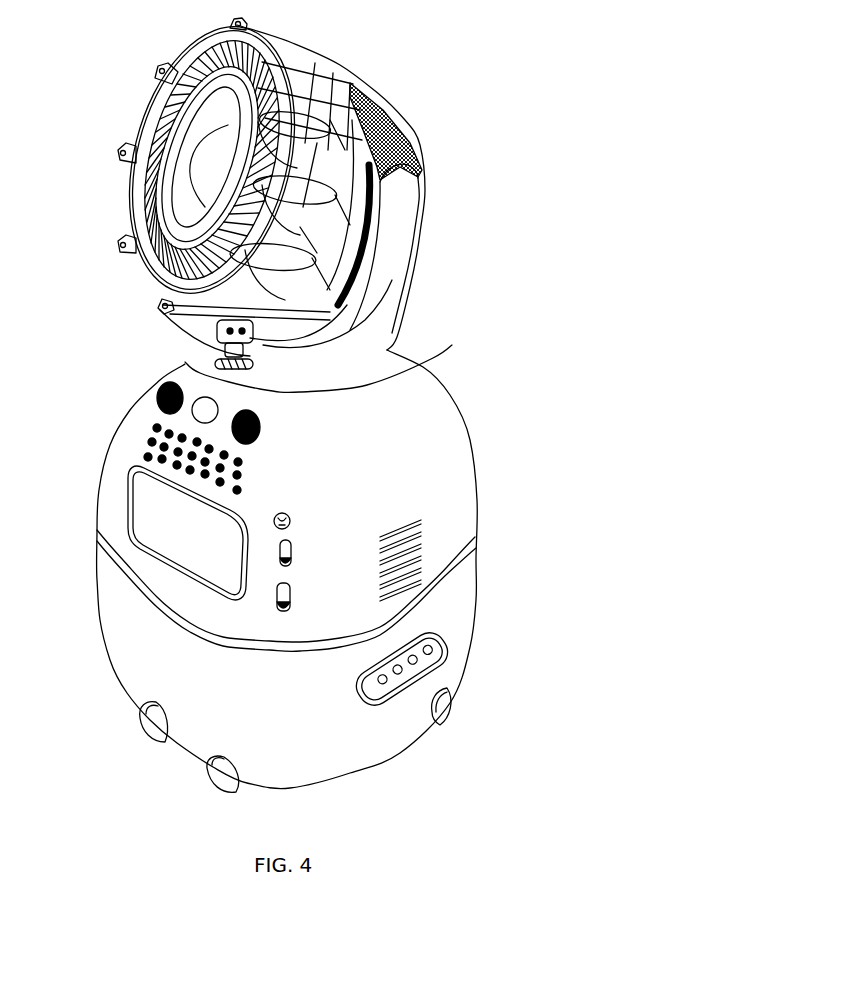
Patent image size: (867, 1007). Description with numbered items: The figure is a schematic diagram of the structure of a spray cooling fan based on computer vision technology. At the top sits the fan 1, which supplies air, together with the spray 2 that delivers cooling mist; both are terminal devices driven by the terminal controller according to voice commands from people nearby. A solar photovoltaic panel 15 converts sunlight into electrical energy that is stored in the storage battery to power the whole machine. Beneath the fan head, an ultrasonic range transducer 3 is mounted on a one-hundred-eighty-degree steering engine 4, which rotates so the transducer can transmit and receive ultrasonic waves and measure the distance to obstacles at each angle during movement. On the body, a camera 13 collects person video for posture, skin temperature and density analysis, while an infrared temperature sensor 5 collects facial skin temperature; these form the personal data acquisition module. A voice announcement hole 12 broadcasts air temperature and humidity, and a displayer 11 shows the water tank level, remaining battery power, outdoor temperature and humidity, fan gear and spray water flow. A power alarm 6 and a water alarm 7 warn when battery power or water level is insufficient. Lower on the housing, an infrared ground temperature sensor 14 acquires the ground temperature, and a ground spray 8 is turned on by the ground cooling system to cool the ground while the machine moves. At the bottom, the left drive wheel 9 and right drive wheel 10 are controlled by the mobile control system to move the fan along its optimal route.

The fan 1 is at (281, 198).
The spray 2 is at (253, 183).
The ultrasonic range transducer 3 is at (253, 327).
The steering engine 4 is at (255, 362).
The infrared temperature sensor 5 is at (258, 428).
The power alarm 6 is at (292, 553).
The water alarm 7 is at (290, 600).
The ground spray 8 is at (418, 672).
The left drive wheel 9 is at (225, 772).
The right drive wheel 10 is at (150, 719).
The displayer 11 is at (188, 536).
The voice announcement hole 12 is at (160, 443).
The camera 13 is at (168, 396).
The infrared ground temperature sensor 14 is at (172, 388).
The solar photovoltaic panel 15 is at (290, 108).